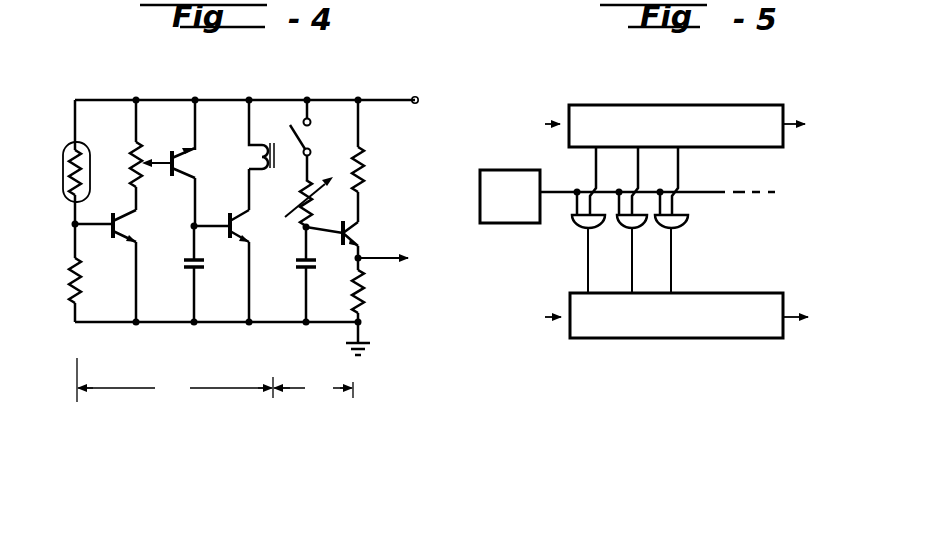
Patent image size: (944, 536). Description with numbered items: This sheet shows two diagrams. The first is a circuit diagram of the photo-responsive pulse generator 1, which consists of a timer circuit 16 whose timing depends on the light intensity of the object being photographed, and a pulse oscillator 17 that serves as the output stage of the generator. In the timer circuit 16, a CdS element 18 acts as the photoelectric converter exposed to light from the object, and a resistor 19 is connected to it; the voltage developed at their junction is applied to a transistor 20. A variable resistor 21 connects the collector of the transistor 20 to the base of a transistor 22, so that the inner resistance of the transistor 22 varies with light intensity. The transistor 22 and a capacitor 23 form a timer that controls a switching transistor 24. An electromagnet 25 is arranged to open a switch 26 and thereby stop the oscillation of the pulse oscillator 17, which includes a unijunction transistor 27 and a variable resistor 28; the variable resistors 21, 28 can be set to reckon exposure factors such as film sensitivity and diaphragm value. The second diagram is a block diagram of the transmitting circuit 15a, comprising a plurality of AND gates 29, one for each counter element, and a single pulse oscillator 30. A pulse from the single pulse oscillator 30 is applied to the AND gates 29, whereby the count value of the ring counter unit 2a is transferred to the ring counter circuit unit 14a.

In FIG. 4, the photo-responsive pulse generator 1 is at (170, 400).
In FIG. 4, the timer circuit 16 is at (175, 380).
In FIG. 4, the pulse oscillator 17 is at (313, 388).
In FIG. 4, the CdS element 18 is at (62, 168).
In FIG. 4, the resistor 19 is at (68, 278).
In FIG. 4, the transistor 20 is at (126, 228).
In FIG. 4, the variable resistor 21 is at (128, 163).
In FIG. 4, the transistor 22 is at (183, 165).
In FIG. 4, the capacitor 23 is at (206, 264).
In FIG. 4, the switching transistor 24 is at (240, 230).
In FIG. 4, the electromagnet 25 is at (262, 172).
In FIG. 4, the switch 26 is at (311, 132).
In FIG. 4, the unijunction transistor 27 is at (333, 254).
In FIG. 4, the variable resistor 28 is at (313, 204).
In FIG. 5, the ring counter unit 2a is at (784, 148).
In FIG. 5, the ring counter circuit unit 14a is at (640, 339).
In FIG. 5, the transmitting circuit 15a is at (667, 220).
In FIG. 5, the AND gates 29 is at (584, 233).
In FIG. 5, the single pulse oscillator 30 is at (540, 224).